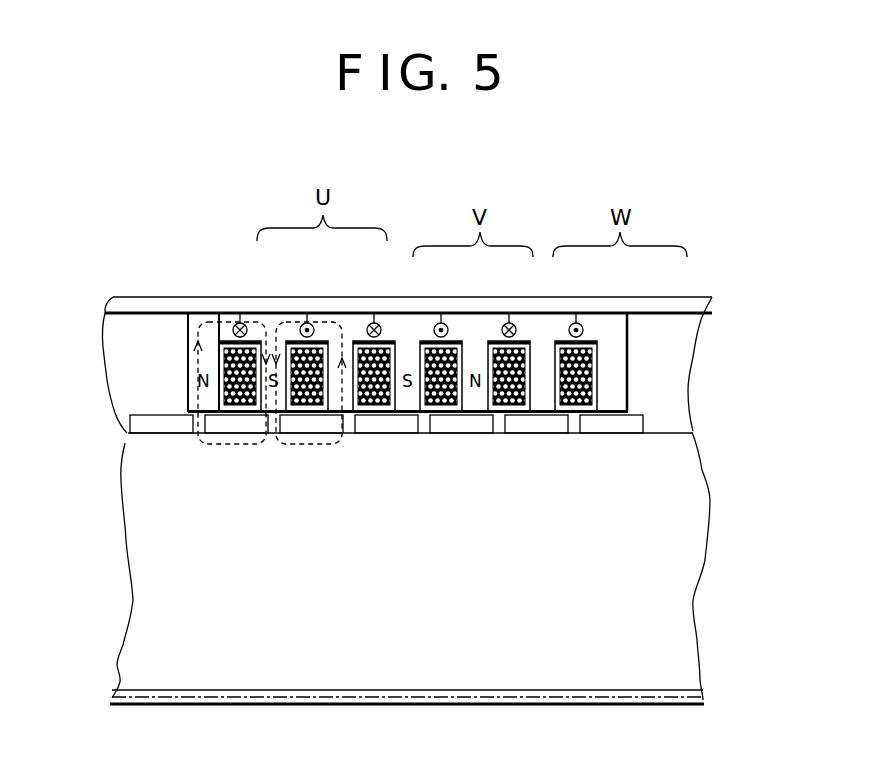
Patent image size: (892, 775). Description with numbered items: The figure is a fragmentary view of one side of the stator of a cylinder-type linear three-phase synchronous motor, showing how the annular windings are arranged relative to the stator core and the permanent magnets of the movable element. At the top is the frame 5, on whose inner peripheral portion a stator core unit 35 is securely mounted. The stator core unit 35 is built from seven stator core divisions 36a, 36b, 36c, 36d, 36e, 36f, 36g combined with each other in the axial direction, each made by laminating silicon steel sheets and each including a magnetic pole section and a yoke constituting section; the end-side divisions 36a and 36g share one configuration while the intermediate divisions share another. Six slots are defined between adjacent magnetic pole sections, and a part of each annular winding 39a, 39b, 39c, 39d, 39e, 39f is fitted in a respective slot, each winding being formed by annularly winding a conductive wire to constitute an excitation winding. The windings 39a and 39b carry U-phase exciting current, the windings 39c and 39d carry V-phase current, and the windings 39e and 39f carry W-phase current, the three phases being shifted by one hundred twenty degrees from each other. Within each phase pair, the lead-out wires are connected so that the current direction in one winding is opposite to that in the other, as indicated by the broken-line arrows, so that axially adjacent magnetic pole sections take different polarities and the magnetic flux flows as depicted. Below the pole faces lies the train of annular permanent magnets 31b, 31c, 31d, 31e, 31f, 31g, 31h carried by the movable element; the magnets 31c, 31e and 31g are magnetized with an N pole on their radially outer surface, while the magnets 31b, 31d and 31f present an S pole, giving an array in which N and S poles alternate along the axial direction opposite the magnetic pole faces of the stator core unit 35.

The frame 5 is at (152, 305).
The stator core unit 35 is at (197, 315).
The stator core division 36a is at (217, 313).
The stator core division 36b is at (243, 316).
The stator core division 36c is at (363, 322).
The stator core division 36d is at (387, 327).
The stator core division 36e is at (493, 320).
The stator core division 36f is at (519, 322).
The stator core division 36g is at (608, 322).
The annular winding 39a is at (250, 346).
The annular winding 39b is at (314, 346).
The annular winding 39c is at (390, 343).
The annular winding 39d is at (455, 345).
The annular winding 39e is at (522, 345).
The annular winding 39f is at (587, 338).
The annular permanent magnet 31b is at (177, 433).
The annular permanent magnet 31c is at (248, 433).
The annular permanent magnet 31d is at (325, 433).
The annular permanent magnet 31e is at (408, 433).
The annular permanent magnet 31f is at (483, 433).
The annular permanent magnet 31g is at (557, 433).
The annular permanent magnet 31h is at (628, 433).